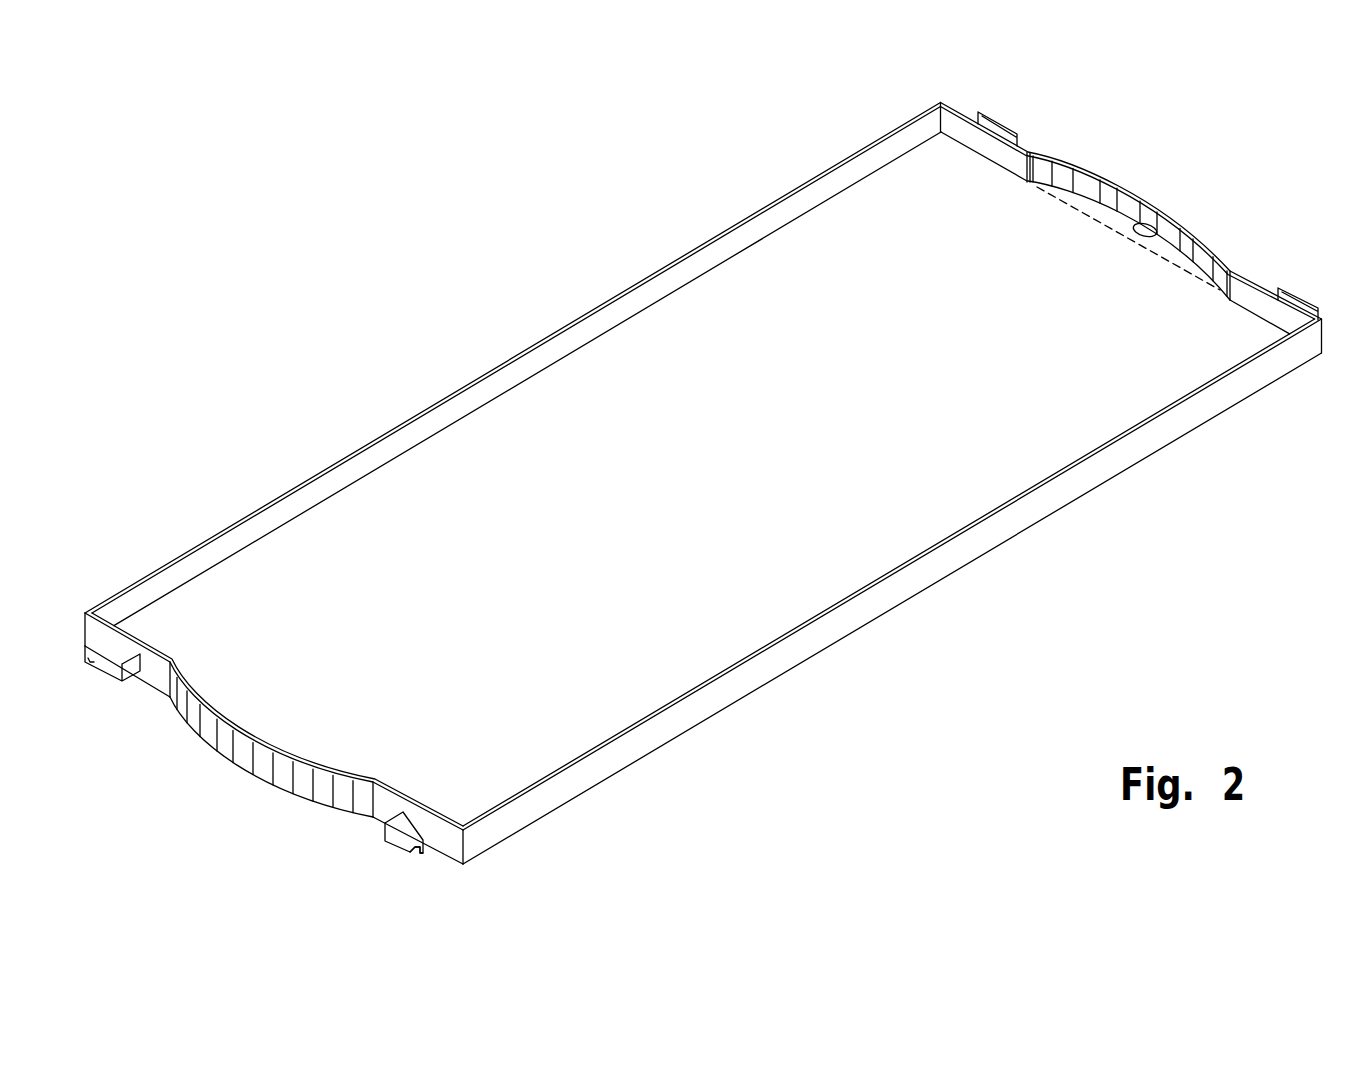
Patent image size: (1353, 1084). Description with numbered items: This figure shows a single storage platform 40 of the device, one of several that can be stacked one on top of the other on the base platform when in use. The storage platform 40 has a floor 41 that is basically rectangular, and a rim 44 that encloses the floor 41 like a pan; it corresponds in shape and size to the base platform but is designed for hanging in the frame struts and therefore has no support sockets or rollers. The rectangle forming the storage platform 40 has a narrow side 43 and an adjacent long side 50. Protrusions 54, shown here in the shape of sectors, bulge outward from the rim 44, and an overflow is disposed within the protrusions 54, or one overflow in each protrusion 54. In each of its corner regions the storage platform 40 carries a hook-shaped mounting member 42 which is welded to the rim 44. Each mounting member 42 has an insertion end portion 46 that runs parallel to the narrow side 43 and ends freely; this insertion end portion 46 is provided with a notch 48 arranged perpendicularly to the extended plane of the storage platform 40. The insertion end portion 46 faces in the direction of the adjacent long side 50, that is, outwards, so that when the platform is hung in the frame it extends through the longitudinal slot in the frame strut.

The storage platform 40 is at (703, 514).
The floor 41 is at (742, 632).
The mounting member 42 is at (376, 833).
The narrow side 43 is at (1077, 210).
The rim 44 is at (863, 608).
The insertion end portion 46 is at (398, 836).
The notch 48 is at (416, 855).
The long side 50 is at (643, 770).
The protrusion 54 is at (1167, 196).